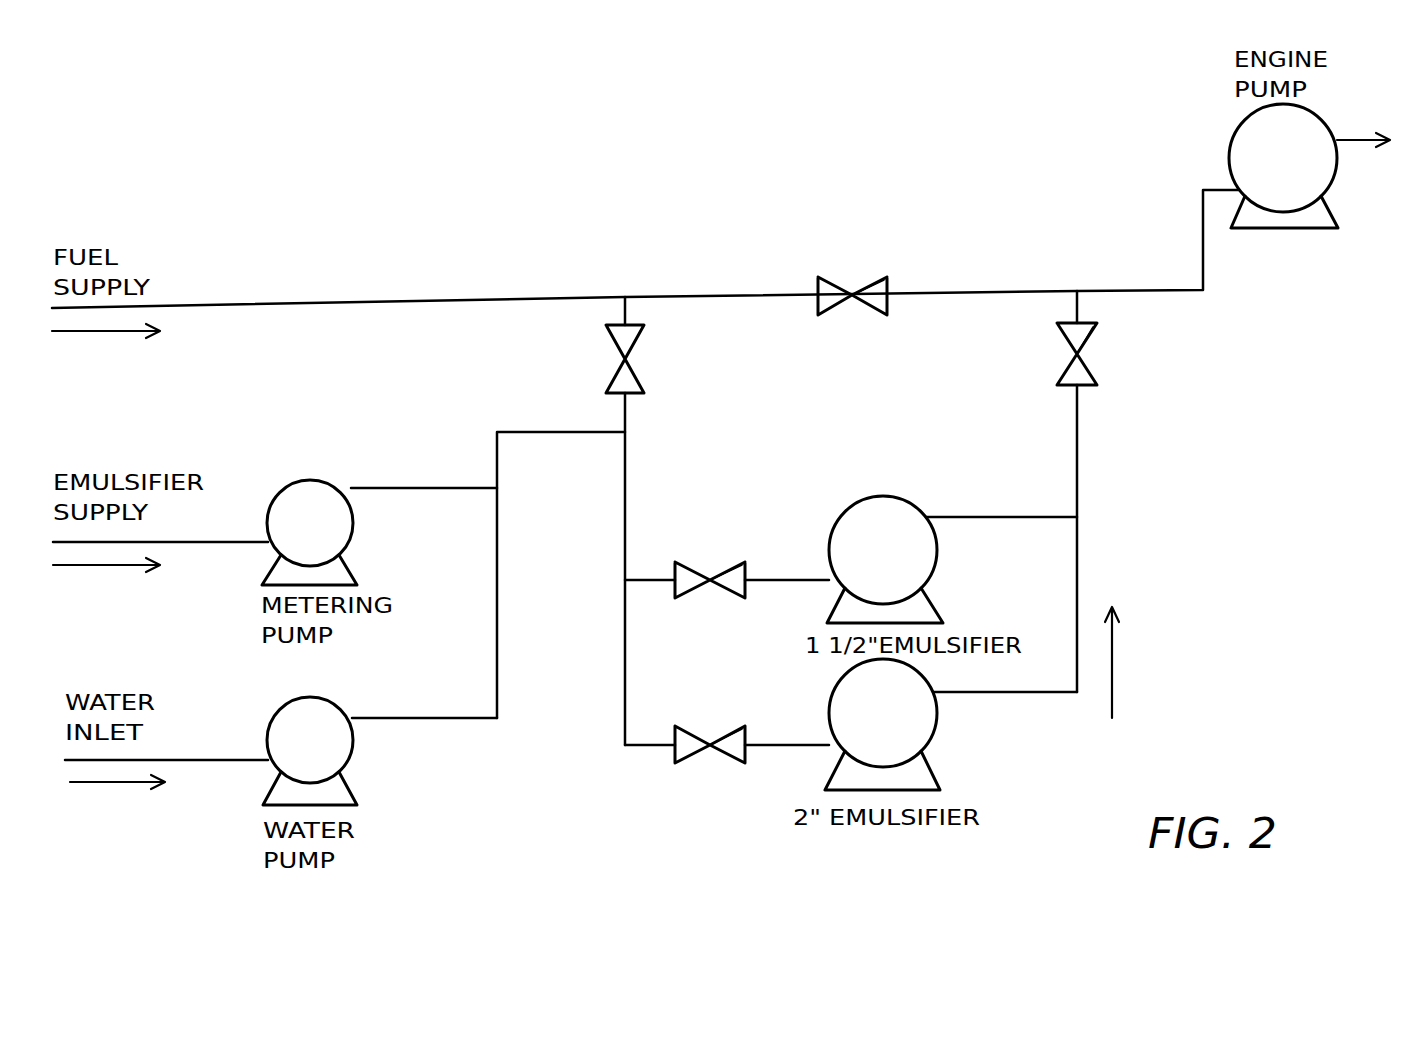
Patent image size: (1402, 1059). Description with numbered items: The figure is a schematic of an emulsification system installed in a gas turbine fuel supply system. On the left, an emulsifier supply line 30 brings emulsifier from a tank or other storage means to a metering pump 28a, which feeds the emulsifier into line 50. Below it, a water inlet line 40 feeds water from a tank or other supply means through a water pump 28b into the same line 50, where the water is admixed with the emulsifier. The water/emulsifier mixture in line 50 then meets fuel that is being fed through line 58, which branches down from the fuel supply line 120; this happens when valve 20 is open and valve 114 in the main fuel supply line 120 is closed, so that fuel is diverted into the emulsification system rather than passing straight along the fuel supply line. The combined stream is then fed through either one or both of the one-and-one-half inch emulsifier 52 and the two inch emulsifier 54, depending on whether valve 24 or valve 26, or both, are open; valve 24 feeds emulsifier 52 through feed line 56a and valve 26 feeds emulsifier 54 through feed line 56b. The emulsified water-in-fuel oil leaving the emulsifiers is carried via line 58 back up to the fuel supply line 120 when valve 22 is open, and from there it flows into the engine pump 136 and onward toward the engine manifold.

The fuel supply line 120 is at (354, 297).
The valve 114 is at (852, 294).
The engine pump 136 is at (1310, 171).
The line 58 is at (625, 310).
The valve 20 is at (632, 357).
The valve 22 is at (1085, 348).
The line 50 is at (541, 432).
The metering pump 28a is at (338, 536).
The water pump 28b is at (338, 753).
The emulsifier supply line 30 is at (215, 542).
The water inlet line 40 is at (206, 760).
The valve 24 is at (700, 575).
The valve 26 is at (706, 742).
The feed line 56a is at (790, 578).
The feed line 56b is at (788, 743).
The 1½ inch emulsifier 52 is at (900, 562).
The 2 inch emulsifier 54 is at (906, 726).